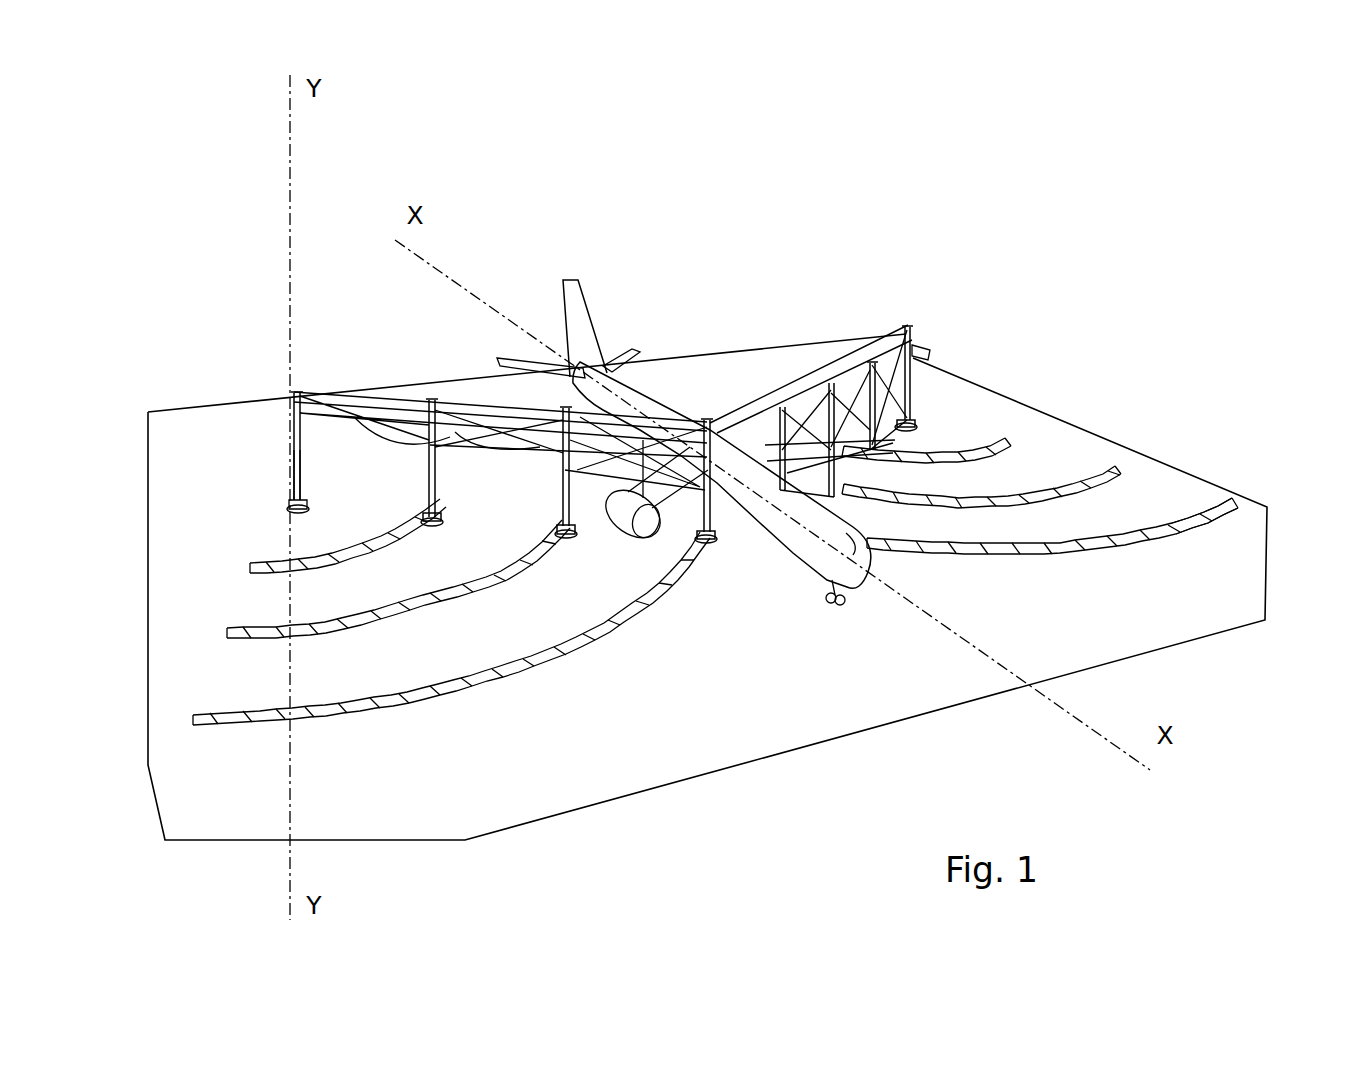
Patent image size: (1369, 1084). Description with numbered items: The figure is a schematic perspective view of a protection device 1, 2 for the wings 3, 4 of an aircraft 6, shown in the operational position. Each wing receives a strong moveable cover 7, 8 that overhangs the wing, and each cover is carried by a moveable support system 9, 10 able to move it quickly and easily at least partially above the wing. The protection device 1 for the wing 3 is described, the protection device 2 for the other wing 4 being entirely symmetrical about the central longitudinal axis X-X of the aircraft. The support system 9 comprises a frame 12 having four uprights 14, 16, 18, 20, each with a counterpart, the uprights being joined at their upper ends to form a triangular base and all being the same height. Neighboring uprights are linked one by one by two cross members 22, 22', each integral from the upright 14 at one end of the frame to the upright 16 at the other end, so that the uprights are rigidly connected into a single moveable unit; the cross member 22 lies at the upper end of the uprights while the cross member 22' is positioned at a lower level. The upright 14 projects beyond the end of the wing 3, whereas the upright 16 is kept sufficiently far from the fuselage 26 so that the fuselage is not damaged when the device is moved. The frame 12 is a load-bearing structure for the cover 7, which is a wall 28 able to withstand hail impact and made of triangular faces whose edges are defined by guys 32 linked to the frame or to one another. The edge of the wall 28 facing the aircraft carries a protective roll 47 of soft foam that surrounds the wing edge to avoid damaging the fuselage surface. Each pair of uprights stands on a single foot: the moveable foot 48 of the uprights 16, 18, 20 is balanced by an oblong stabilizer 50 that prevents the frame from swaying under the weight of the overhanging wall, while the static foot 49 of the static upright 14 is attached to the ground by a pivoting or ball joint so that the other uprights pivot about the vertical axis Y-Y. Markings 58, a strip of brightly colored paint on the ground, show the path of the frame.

The protection device 1 is at (337, 355).
The protection device 2 is at (770, 420).
The wing 3 is at (296, 392).
The wing 4 is at (807, 425).
The aircraft 6 is at (793, 540).
The moveable cover 7 is at (340, 385).
The moveable cover 8 is at (748, 395).
The moveable support system 9 is at (283, 480).
The moveable support system 10 is at (913, 357).
The frame 12 is at (717, 403).
The upright 14 is at (911, 327).
The upright 16 is at (787, 367).
The upright 18 is at (850, 455).
The upright 20 is at (835, 455).
The cross member 22 is at (391, 591).
The cross member 22' is at (313, 658).
The fuselage 26 is at (750, 510).
The wall 28 is at (296, 506).
The guy 32 is at (536, 446).
The protective roll 47 is at (670, 505).
The moveable foot 48 is at (1207, 518).
The static foot 49 is at (923, 353).
The stabilizer 50 is at (565, 462).
The markings 58 is at (1230, 506).